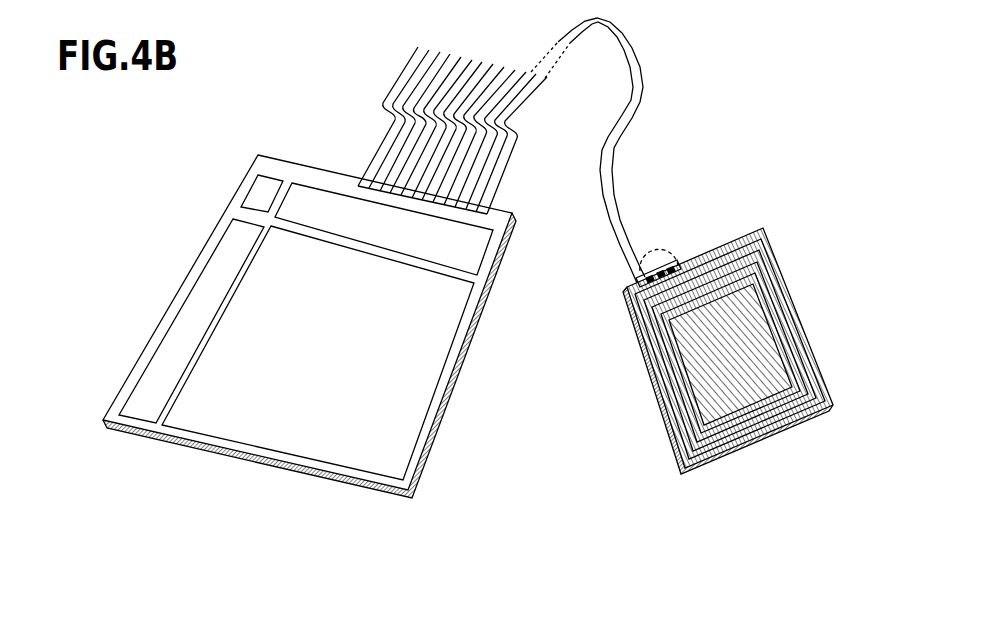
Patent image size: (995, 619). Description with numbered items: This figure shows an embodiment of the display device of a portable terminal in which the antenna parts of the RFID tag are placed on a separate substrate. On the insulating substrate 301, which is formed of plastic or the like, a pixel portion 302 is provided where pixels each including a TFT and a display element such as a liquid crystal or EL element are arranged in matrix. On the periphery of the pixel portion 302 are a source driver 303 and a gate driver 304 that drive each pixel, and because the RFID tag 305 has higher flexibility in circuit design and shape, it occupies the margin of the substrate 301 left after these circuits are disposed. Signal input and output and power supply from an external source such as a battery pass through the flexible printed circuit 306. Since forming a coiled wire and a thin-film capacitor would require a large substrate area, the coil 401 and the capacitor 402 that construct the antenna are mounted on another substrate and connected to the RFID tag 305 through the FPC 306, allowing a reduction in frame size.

The insulating substrate 301 is at (158, 430).
The pixel portion 302 is at (318, 353).
The source driver 303 is at (470, 247).
The gate driver 304 is at (153, 392).
The RFID tag 305 is at (257, 200).
The flexible printed circuit (FPC) 306 is at (388, 113).
The coil 401 is at (667, 422).
The capacitor 402 is at (660, 253).